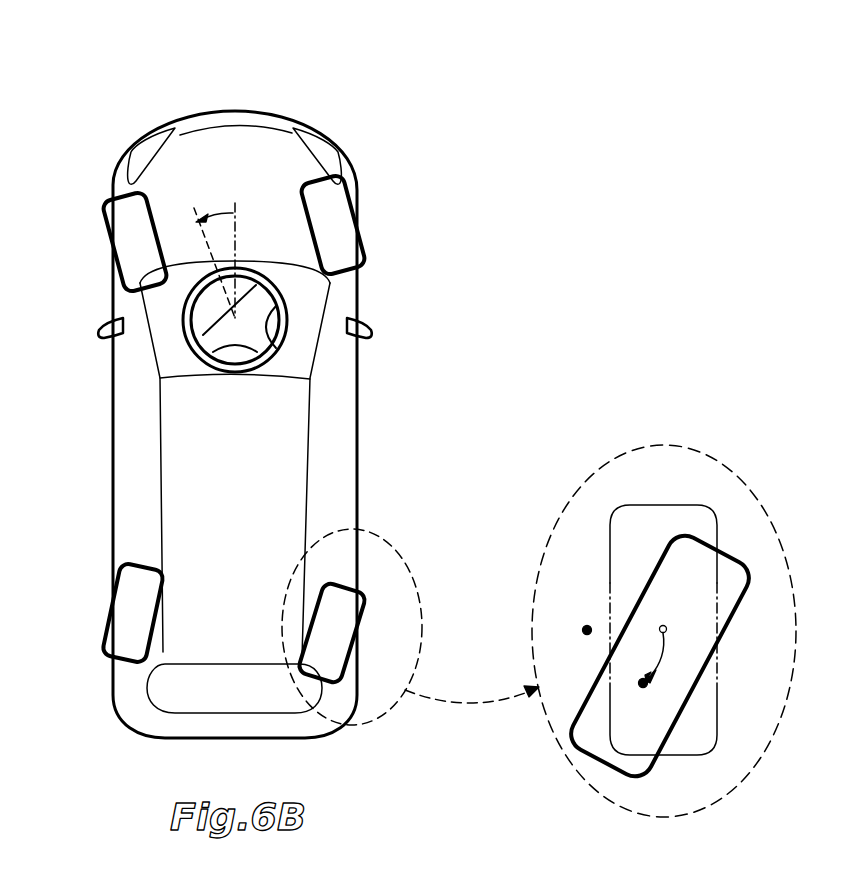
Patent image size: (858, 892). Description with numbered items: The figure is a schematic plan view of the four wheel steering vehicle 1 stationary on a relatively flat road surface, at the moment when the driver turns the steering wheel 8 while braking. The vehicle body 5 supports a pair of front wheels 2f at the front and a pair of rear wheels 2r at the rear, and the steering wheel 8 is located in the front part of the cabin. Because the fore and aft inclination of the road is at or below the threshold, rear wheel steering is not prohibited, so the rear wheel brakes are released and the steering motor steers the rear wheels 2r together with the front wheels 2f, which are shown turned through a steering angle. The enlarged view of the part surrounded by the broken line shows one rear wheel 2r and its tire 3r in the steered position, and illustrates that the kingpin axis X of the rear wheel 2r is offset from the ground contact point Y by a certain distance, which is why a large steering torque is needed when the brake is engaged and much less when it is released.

The four wheel steering vehicle 1 is at (250, 84).
The vehicle body 5 is at (163, 121).
The front wheel 2f is at (120, 235).
The rear wheel 2r is at (111, 640).
The steering wheel 8 is at (257, 362).
The tire of rear wheel 3r is at (667, 782).
The kingpin axis X is at (585, 627).
The ground contact point Y is at (647, 686).